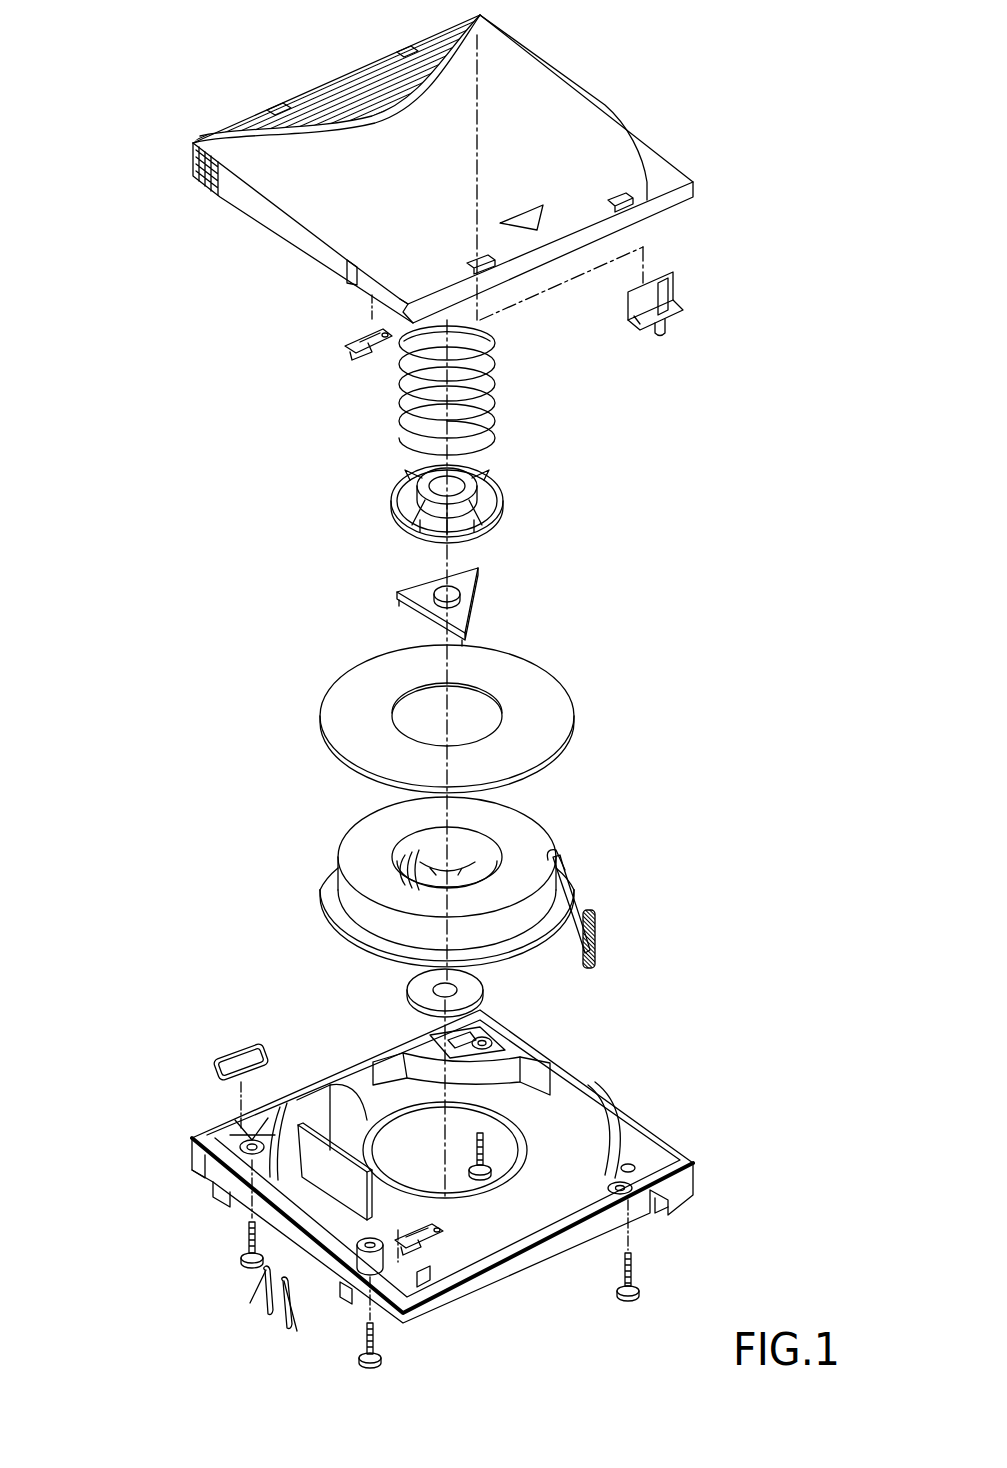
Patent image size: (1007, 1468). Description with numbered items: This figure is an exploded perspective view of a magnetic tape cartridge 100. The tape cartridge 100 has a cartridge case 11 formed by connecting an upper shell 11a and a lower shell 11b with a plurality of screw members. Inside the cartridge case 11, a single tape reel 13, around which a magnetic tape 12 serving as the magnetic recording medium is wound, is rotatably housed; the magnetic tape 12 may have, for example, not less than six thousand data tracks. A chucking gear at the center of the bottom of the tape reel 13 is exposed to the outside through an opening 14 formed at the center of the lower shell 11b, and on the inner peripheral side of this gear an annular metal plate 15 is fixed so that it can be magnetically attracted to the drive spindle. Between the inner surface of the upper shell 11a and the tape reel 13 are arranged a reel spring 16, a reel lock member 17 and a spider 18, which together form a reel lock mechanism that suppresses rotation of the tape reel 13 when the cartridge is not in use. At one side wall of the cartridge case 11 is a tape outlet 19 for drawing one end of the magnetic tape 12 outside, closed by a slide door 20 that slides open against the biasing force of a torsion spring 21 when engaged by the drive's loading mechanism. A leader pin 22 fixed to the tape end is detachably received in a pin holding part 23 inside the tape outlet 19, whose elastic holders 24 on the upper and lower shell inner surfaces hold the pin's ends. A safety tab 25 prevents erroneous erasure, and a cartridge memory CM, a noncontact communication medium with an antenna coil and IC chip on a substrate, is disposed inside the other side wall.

The tape cartridge 100 is at (135, 150).
The cartridge case 11 is at (232, 205).
The upper shell 11a is at (533, 90).
The lower shell 11b is at (577, 1077).
The magnetic tape 12 is at (527, 840).
The tape reel 13 is at (300, 678).
The opening 14 is at (503, 1160).
The annular metal plate 15 is at (425, 982).
The reel spring 16 is at (495, 387).
The reel lock member 17 is at (392, 492).
The spider 18 is at (482, 600).
The tape outlet 19 is at (352, 283).
The slide door 20 is at (330, 1160).
The torsion spring 21 is at (270, 1313).
The leader pin 22 is at (594, 912).
The pin holding part 23 is at (396, 1318).
The elastic holders 24 is at (360, 335).
The safety tab 25 is at (673, 283).
The cartridge memory CM is at (213, 1072).